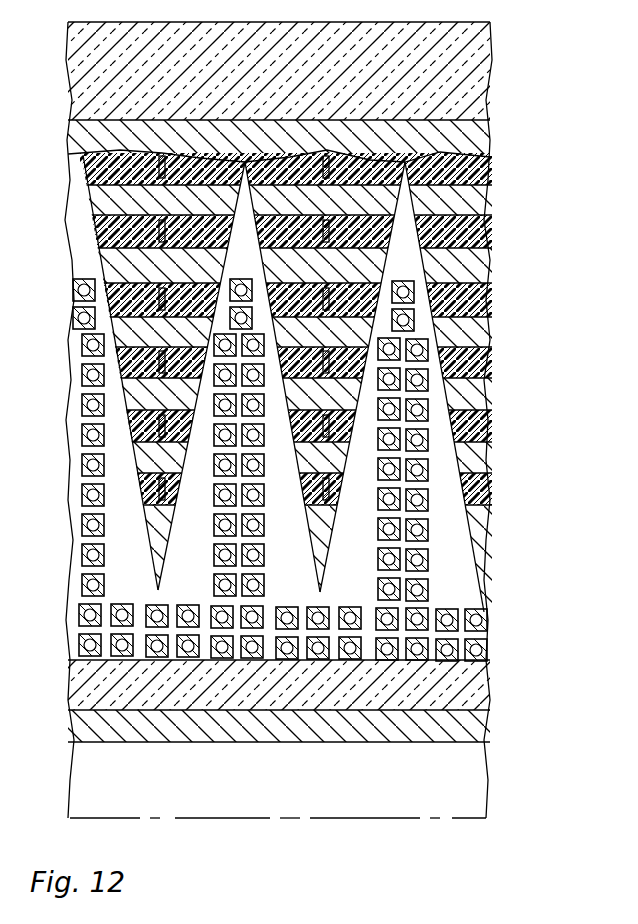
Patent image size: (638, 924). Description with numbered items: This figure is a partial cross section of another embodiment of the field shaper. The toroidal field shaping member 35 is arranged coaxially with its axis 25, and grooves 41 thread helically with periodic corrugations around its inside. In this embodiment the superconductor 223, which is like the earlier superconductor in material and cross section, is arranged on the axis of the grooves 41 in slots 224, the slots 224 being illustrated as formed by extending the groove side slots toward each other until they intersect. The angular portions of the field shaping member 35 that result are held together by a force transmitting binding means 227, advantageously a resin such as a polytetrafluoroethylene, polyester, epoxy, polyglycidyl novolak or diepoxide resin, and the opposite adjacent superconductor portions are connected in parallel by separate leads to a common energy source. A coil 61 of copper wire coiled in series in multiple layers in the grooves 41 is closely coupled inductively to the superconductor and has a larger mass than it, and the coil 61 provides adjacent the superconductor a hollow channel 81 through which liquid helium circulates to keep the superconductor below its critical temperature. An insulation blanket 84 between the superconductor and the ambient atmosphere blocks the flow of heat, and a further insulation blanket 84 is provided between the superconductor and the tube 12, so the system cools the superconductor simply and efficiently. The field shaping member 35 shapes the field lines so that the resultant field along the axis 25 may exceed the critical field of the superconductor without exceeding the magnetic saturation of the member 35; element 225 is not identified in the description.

The tube 12 is at (475, 735).
The axis 25 is at (340, 816).
The field shaping member 35 is at (437, 145).
The grooves 41 is at (350, 590).
The coil 61 is at (430, 421).
The hollow channel 81 is at (122, 605).
The insulation blanket 84 is at (465, 93).
The superconductor 223 is at (325, 290).
The slots 224 is at (313, 310).
The layer stack 225 is at (193, 505).
The force transmitting binding means 227 is at (283, 277).